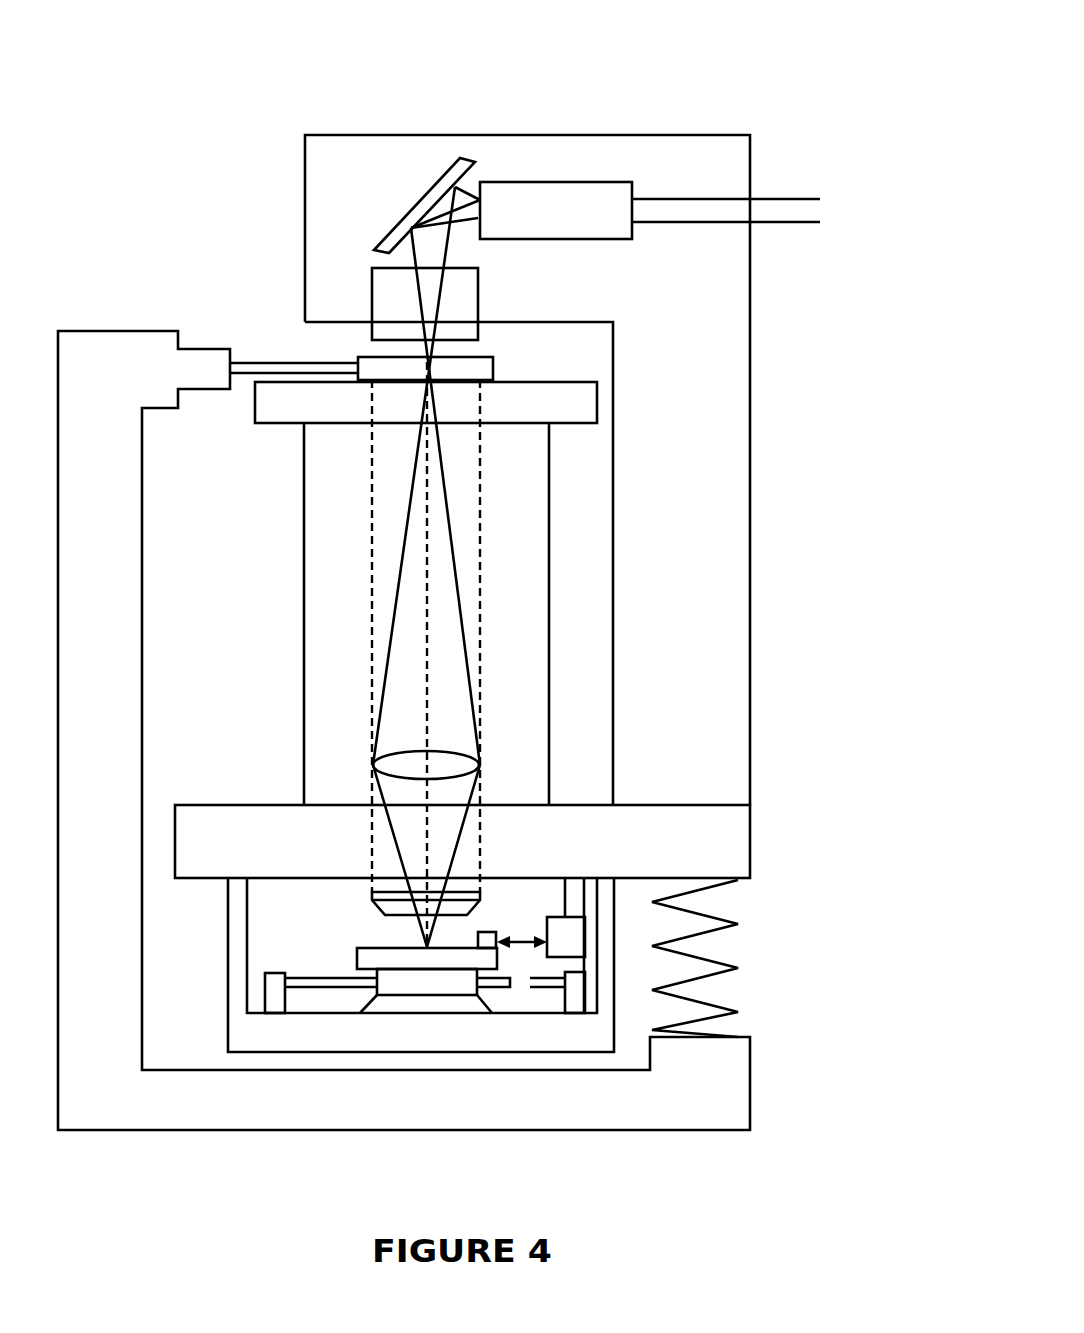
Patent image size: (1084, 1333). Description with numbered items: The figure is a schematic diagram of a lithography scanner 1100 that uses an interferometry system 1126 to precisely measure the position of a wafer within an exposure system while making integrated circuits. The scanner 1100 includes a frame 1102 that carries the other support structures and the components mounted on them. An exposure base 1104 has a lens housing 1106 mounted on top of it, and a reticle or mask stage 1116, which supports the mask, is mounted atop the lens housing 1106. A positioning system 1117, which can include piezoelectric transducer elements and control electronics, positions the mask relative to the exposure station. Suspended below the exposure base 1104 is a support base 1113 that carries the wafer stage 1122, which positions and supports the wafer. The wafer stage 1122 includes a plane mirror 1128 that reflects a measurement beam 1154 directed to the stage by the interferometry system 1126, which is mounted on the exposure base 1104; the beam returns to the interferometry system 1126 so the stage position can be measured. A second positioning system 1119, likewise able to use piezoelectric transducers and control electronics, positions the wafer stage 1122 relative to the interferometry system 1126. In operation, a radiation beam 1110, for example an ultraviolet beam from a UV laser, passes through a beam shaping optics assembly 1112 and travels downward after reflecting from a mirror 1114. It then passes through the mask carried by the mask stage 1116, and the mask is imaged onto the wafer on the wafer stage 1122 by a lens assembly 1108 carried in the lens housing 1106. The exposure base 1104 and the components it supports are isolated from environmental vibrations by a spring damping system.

The lithography scanner 1100 is at (578, 60).
The frame 1102 is at (457, 730).
The exposure base 1104 is at (516, 825).
The lens housing 1106 is at (489, 593).
The lens assembly 1108 is at (538, 636).
The radiation beam 1110 is at (830, 204).
The beam shaping optics assembly 1112 is at (588, 169).
The support base 1113 is at (300, 1038).
The mirror 1114 is at (396, 199).
The mask stage 1116 is at (338, 337).
The positioning system 1117 is at (276, 363).
The positioning system 1119 is at (425, 1049).
The wafer stage 1122 is at (376, 935).
The interferometry system 1126 is at (617, 927).
The plane mirror 1128 is at (545, 888).
The measurement beam 1154 is at (491, 1044).